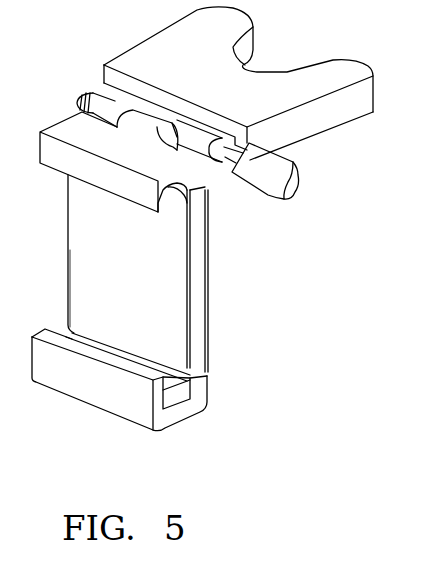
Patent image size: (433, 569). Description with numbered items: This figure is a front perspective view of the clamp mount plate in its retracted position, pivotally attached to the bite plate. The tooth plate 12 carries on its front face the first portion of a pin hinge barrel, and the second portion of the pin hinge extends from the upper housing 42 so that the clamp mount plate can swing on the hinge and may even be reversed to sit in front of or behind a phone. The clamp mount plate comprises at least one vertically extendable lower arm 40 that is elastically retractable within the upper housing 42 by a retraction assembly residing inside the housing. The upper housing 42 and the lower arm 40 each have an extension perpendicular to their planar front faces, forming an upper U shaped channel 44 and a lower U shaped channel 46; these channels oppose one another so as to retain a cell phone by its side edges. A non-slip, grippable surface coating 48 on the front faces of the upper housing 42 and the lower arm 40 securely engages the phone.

The tooth plate 12 is at (110, 77).
The lower arm 40 is at (200, 402).
The upper housing 42 is at (198, 287).
The upper U shaped channel 44 is at (187, 200).
The lower U shaped channel 46 is at (172, 398).
The non-slip, grippable surface coating 48 is at (192, 332).